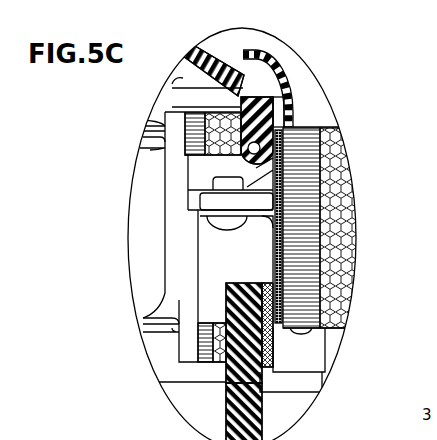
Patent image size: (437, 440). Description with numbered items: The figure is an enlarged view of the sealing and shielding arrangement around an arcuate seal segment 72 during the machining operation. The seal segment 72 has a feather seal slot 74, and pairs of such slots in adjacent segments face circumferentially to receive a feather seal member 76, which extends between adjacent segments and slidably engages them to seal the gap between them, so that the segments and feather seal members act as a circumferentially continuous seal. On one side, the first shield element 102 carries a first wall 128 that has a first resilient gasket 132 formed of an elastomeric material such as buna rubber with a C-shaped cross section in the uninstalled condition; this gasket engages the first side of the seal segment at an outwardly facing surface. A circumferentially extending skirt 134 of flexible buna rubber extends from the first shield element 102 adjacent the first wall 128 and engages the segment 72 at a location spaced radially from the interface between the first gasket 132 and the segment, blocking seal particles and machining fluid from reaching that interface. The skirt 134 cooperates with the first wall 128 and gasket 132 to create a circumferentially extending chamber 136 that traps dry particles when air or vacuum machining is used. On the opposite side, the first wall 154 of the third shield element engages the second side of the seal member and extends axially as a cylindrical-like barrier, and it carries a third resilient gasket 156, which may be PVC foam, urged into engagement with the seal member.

The first shield element 102 is at (233, 32).
The skirt 134 is at (276, 64).
The chamber 136 is at (278, 98).
The first wall 128 is at (232, 93).
The feather seal slot 74 is at (284, 182).
The feather seal member 76 is at (281, 220).
The first resilient gasket 132 is at (262, 157).
The third resilient gasket 156 is at (262, 283).
The seal segment 72 is at (292, 360).
The first wall 154 is at (262, 388).